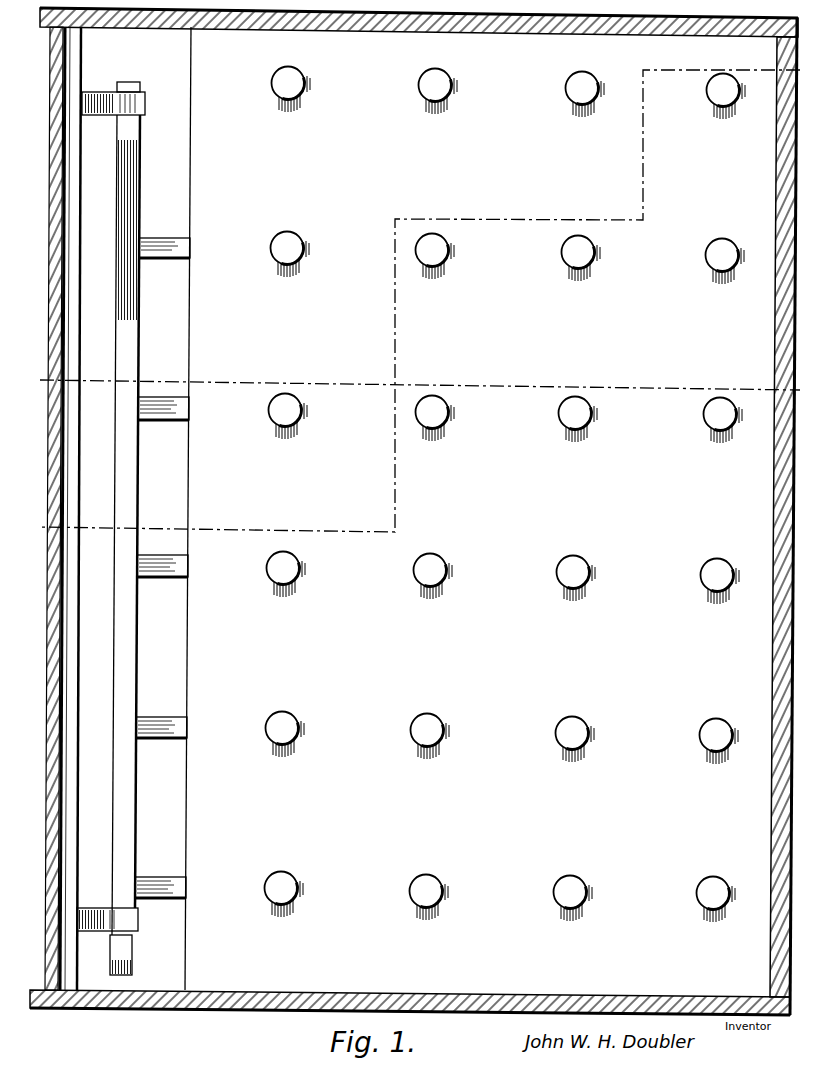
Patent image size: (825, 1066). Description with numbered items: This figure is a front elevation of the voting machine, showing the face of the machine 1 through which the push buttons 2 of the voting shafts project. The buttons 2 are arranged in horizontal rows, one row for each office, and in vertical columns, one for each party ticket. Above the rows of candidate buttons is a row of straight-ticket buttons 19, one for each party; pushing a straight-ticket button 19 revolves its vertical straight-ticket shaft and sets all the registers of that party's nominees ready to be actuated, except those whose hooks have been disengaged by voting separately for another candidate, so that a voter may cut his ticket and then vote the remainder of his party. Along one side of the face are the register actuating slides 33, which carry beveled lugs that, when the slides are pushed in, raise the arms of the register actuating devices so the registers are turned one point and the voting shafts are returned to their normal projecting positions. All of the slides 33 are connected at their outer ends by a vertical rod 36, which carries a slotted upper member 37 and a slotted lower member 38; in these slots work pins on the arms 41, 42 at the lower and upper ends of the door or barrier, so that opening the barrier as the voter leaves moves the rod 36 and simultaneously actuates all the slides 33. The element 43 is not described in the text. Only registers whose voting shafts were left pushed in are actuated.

The face of the machine 1 is at (423, 511).
The push buttons 2 is at (558, 413).
The straight-ticket buttons 19 is at (305, 83).
The register actuating slides 33 is at (173, 258).
The vertical rod 36 is at (118, 697).
The slotted upper member 37 is at (103, 92).
The slotted lower member 38 is at (130, 923).
The arm 41 is at (123, 953).
The arm 42 is at (143, 128).
The casing wall 43 is at (48, 840).